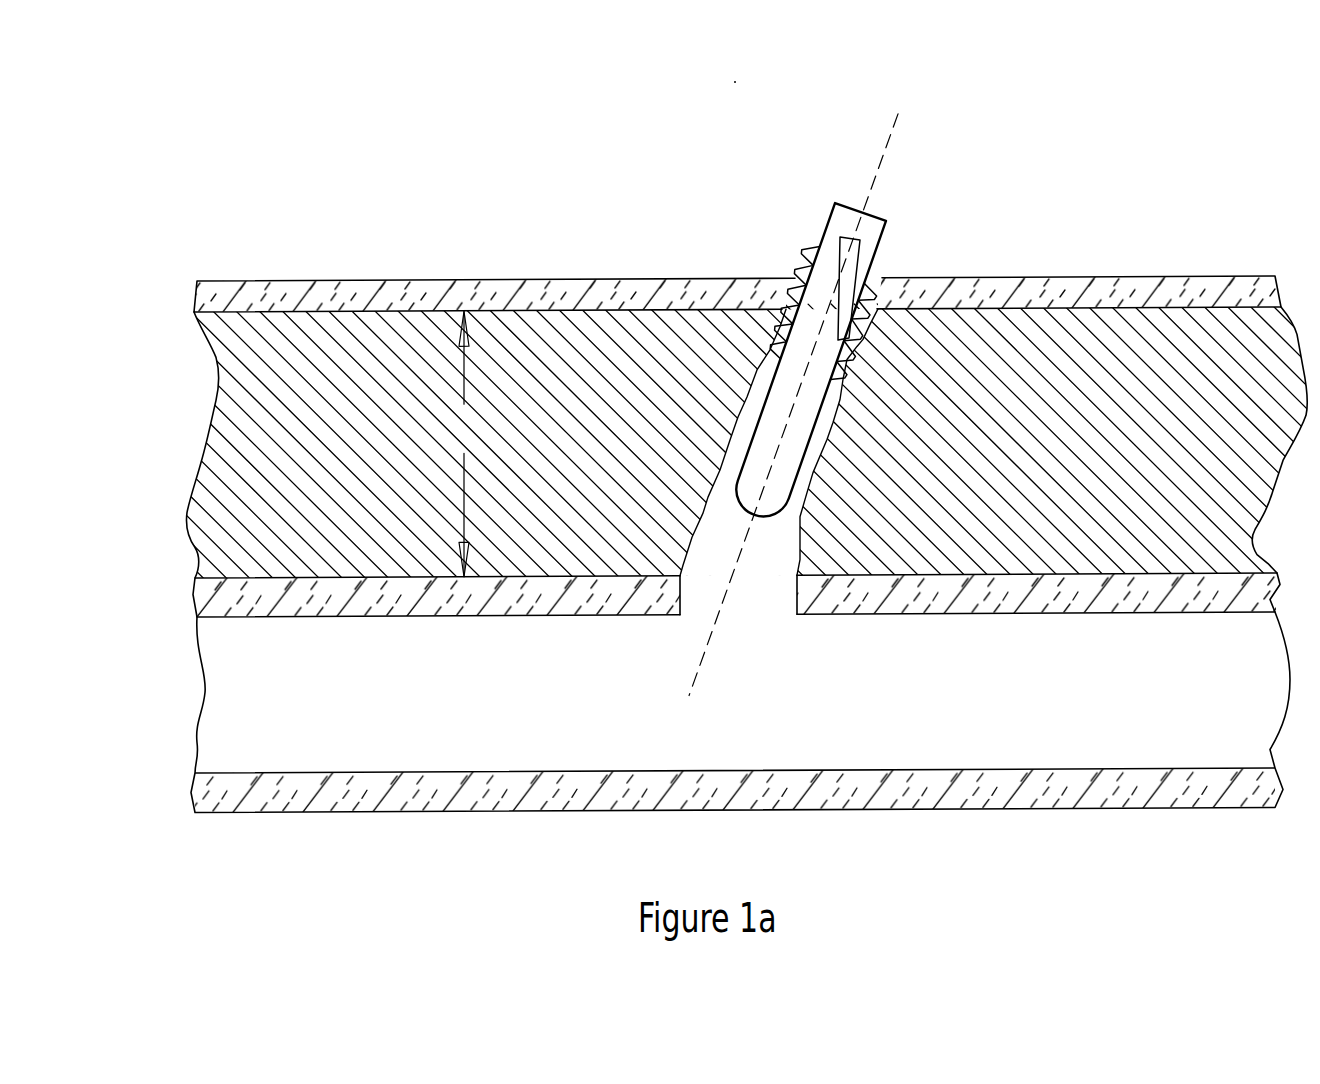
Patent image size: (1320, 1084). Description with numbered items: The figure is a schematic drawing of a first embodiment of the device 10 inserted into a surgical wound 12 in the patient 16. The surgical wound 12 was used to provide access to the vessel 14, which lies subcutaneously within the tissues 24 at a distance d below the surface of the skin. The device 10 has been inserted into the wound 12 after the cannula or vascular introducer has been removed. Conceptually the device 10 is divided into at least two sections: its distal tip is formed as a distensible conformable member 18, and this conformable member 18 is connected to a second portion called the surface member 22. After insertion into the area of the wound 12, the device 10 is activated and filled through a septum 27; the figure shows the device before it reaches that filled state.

The device 10 is at (1033, 130).
The surgical wound 12 is at (767, 603).
The vessel 14 is at (1065, 592).
The patient 16 is at (1077, 289).
The distensible conformable member 18 is at (775, 460).
The surface member 22 is at (883, 239).
The tissues 24 is at (332, 438).
The septum 27 is at (853, 222).